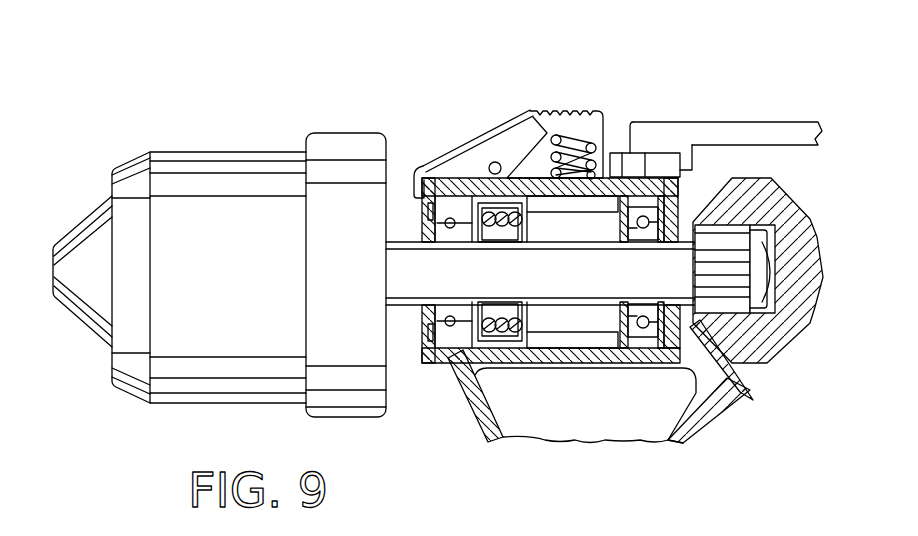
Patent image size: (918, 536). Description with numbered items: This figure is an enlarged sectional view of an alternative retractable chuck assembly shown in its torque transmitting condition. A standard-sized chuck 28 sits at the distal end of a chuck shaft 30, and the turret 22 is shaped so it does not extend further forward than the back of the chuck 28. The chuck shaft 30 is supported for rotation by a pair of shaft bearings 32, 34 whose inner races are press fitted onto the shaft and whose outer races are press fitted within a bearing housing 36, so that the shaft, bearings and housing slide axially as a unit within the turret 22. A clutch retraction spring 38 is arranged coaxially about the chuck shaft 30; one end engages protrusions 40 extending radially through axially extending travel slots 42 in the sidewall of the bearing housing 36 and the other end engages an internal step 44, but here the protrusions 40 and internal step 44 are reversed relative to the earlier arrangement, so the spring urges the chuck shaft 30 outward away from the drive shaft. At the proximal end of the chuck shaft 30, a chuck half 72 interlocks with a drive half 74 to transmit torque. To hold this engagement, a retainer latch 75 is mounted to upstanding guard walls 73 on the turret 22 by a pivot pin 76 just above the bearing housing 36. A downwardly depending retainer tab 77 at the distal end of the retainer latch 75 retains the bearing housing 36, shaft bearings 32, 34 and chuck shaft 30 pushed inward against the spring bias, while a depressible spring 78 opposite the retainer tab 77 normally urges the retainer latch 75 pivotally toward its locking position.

The turret 22 is at (475, 425).
The chuck 28 is at (203, 276).
The chuck shaft 30 is at (637, 287).
The shaft bearing 32 is at (446, 197).
The shaft bearing 34 is at (657, 153).
The bearing housing 36 is at (432, 363).
The clutch retraction spring 38 is at (492, 363).
The protrusions 40 is at (535, 249).
The travel slots 42 is at (620, 153).
The internal step 44 is at (480, 250).
The chuck half 72 is at (710, 313).
The guard walls 73 is at (604, 140).
The drive half 74 is at (742, 122).
The retainer latch 75 is at (495, 137).
The pivot pin 76 is at (495, 162).
The retainer tab 77 is at (410, 197).
The depressible spring 78 is at (567, 110).